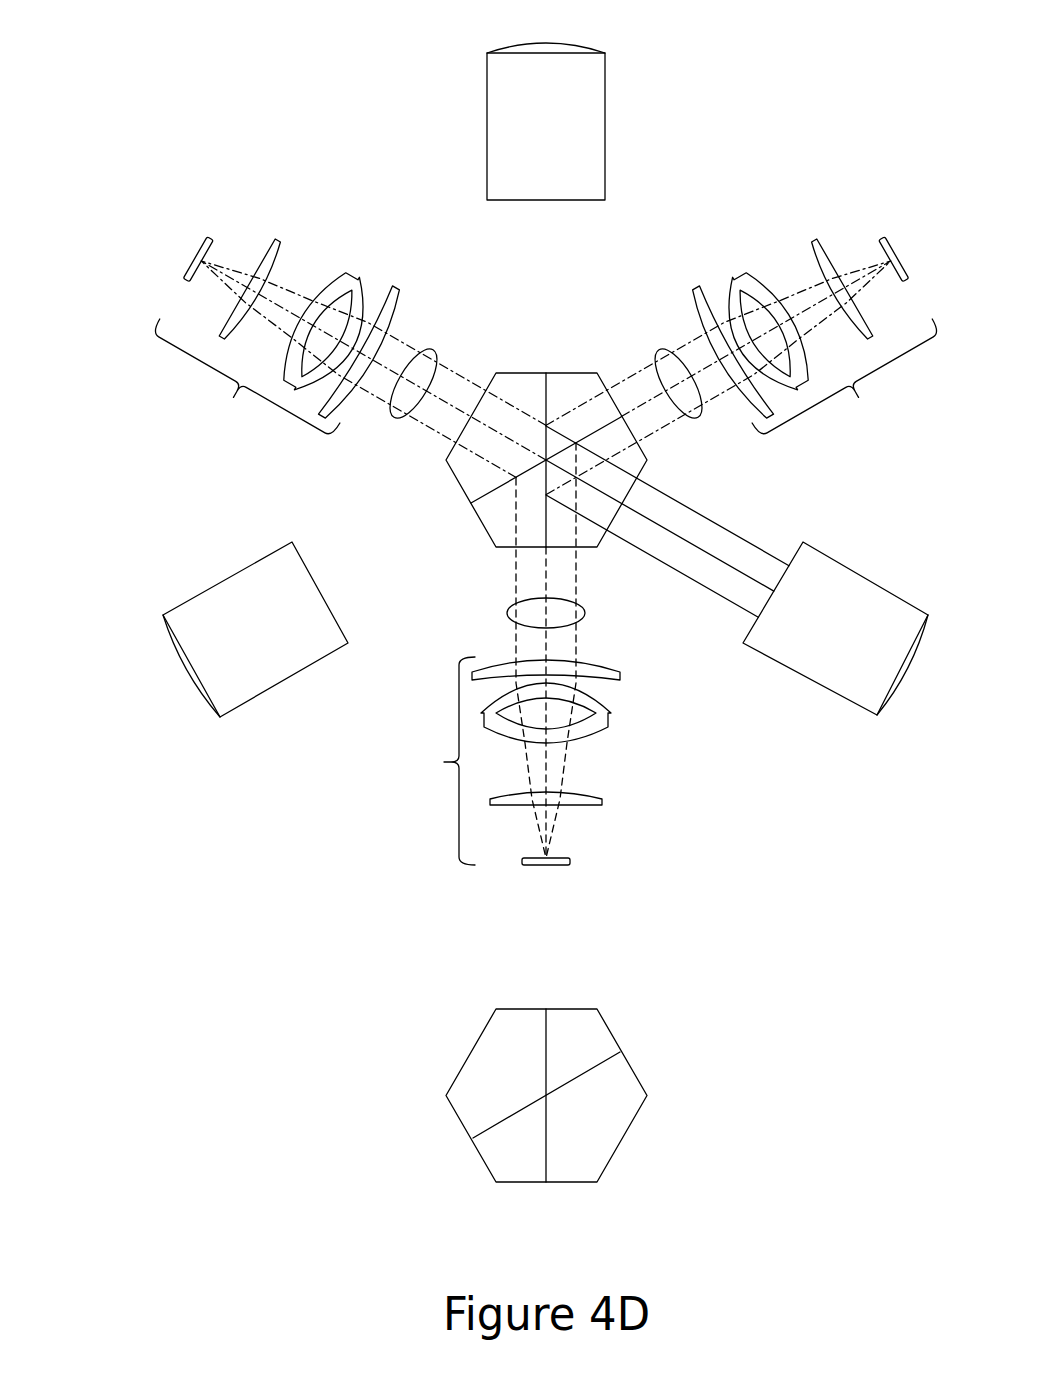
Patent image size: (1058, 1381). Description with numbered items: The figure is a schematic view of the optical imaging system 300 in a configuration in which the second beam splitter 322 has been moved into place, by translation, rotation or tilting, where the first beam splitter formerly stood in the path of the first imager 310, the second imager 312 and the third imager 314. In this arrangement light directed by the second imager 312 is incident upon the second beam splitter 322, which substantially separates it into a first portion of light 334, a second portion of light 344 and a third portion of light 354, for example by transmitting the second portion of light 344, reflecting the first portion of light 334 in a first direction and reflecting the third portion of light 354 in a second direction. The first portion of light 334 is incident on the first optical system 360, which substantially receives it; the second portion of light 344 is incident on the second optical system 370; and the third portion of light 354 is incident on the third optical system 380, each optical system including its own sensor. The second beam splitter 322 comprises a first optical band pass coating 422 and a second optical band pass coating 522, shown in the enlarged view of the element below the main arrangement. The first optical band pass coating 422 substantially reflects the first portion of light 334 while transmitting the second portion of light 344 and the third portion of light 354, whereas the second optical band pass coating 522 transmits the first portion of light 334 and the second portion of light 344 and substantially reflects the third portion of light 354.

The optical imaging system 300 is at (137, 70).
The first imager 310 is at (605, 123).
The second imager 312 is at (869, 578).
The third imager 314 is at (228, 577).
The second beam splitter 322 is at (457, 483).
The first portion of light 334 is at (508, 613).
The second portion of light 344 is at (433, 352).
The third portion of light 354 is at (659, 352).
The first optical system 360 is at (444, 762).
The second optical system 370 is at (234, 397).
The third optical system 380 is at (858, 397).
The first optical band pass coating 422 is at (507, 1121).
The second optical band pass coating 522 is at (548, 1035).